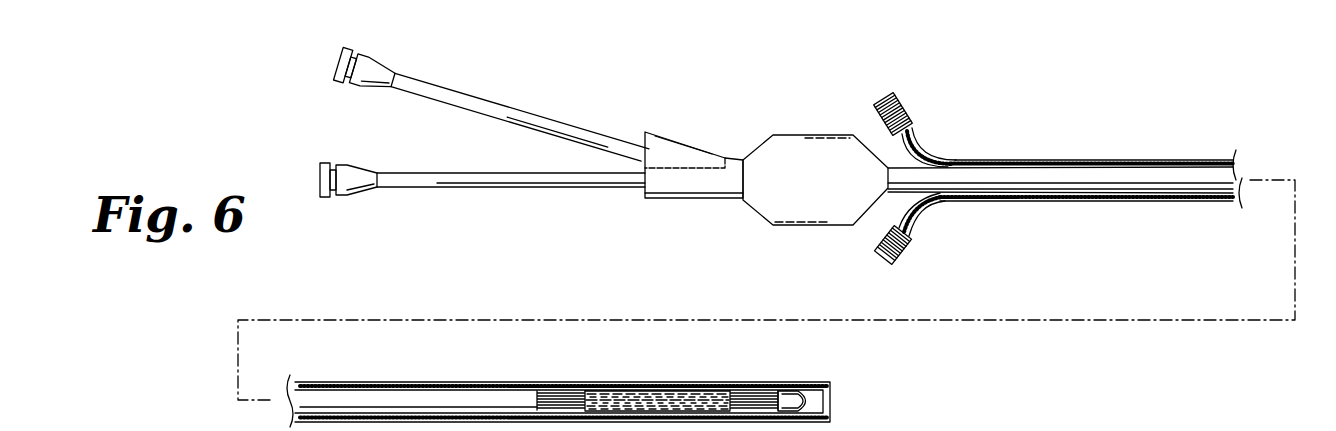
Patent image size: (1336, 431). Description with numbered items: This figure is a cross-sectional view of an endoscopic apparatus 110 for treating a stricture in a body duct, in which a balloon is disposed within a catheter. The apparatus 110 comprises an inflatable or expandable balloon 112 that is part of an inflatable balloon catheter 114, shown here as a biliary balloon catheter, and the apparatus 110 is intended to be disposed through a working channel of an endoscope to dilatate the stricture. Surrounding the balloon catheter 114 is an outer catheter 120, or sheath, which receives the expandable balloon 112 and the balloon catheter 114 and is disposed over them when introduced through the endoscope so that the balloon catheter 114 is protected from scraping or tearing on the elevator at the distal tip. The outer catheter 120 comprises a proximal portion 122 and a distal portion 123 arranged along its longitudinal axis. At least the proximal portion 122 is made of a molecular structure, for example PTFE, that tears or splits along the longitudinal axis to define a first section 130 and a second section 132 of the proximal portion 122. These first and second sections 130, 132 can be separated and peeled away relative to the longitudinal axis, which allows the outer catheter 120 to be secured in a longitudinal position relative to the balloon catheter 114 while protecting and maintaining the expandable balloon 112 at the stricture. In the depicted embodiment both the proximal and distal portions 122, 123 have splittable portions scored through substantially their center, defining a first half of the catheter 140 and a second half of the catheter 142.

The endoscopic apparatus 110 is at (1230, 80).
The expandable balloon 112 is at (663, 386).
The inflatable balloon catheter 114 is at (1017, 176).
The outer catheter 120 is at (1112, 160).
The proximal portion 122 is at (967, 201).
The distal portion 123 is at (770, 386).
The first section 130 is at (910, 132).
The second section 132 is at (902, 214).
The first half of the catheter 140 is at (904, 142).
The second half of the catheter 142 is at (914, 228).